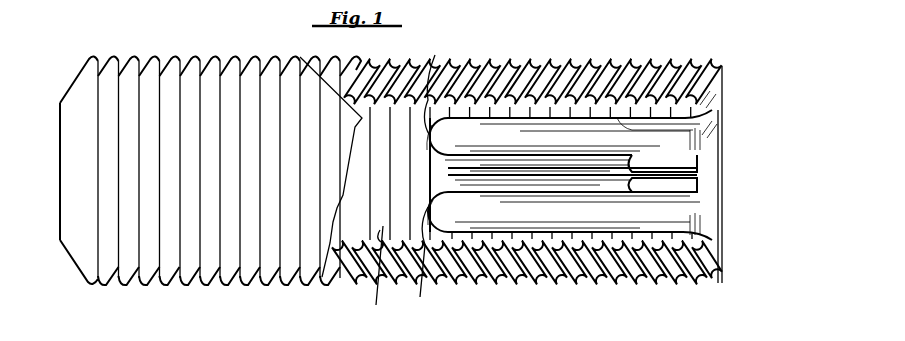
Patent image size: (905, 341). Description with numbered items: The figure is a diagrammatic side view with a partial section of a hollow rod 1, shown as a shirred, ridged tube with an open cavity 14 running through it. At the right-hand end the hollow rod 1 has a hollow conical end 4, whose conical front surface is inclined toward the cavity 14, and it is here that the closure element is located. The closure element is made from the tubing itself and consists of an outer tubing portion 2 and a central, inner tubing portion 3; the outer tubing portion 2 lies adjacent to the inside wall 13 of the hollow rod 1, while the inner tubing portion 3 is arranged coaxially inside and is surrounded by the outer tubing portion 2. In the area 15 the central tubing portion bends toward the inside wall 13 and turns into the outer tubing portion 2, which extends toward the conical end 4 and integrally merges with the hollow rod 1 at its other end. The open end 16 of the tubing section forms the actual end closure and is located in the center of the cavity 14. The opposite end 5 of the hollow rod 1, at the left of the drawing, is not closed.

The hollow rod 1 is at (688, 52).
The outer tubing portion 2 is at (700, 128).
The inner tubing portion 3 is at (692, 178).
The hollow conical end 4 is at (703, 248).
The opposite end 5 is at (74, 80).
The inside wall 13 is at (300, 57).
The cavity 14 is at (370, 275).
The area 15 is at (435, 55).
The open end 16 is at (700, 187).